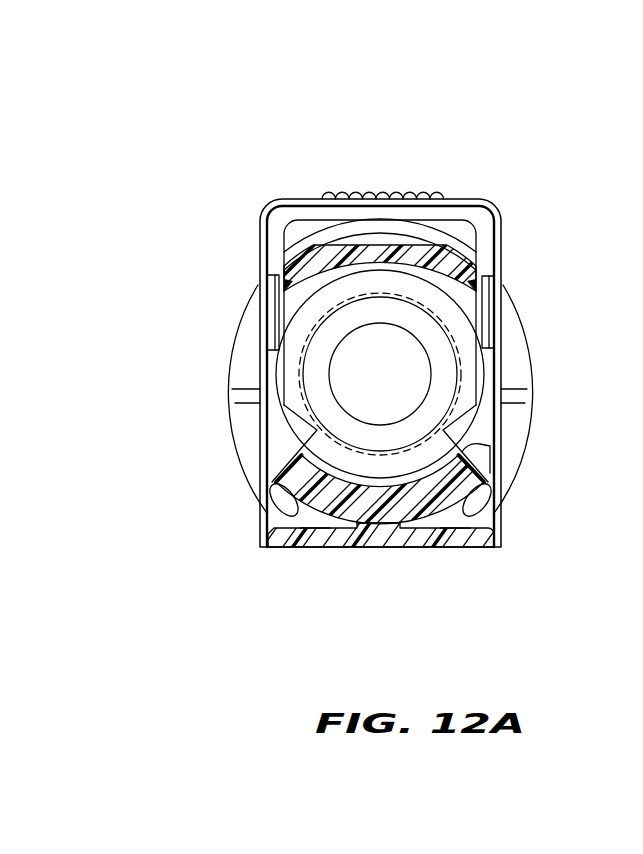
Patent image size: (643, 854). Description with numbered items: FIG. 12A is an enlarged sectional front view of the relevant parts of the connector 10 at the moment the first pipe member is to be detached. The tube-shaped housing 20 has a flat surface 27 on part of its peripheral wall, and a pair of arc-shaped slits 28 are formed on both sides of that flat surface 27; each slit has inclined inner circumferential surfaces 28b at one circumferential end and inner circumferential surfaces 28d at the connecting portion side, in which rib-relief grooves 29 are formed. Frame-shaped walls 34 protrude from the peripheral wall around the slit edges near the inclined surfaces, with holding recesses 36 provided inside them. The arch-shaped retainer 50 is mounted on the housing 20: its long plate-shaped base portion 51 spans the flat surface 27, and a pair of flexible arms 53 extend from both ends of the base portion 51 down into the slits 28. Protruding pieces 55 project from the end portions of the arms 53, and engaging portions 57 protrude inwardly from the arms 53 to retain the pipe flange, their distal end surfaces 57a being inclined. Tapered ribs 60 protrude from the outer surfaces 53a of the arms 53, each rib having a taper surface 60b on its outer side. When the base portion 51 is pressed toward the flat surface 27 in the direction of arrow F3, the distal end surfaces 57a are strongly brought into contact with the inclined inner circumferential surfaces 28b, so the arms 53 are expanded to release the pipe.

The connector 10 is at (363, 168).
The pressing direction arrow F3 is at (383, 182).
The housing 20 is at (232, 430).
The flat surface 27 is at (357, 244).
The slits 28 is at (520, 352).
The inner circumferential surfaces at the other end portions 28b is at (322, 460).
The inner circumferential surfaces at the connecting portion side 28d is at (250, 430).
The rib-relief grooves 29 is at (243, 335).
The frame-shaped walls 34 is at (480, 540).
The holding recesses 36 is at (310, 524).
The retainer 50 is at (486, 192).
The base portion 51 is at (451, 214).
The arms 53 is at (259, 240).
The outer surfaces 53a is at (283, 265).
The protruding pieces 55 is at (280, 494).
The engaging portions 57 is at (282, 427).
The distal end surfaces 57a is at (462, 446).
The ribs 60 is at (266, 300).
The taper surfaces 60b is at (494, 293).